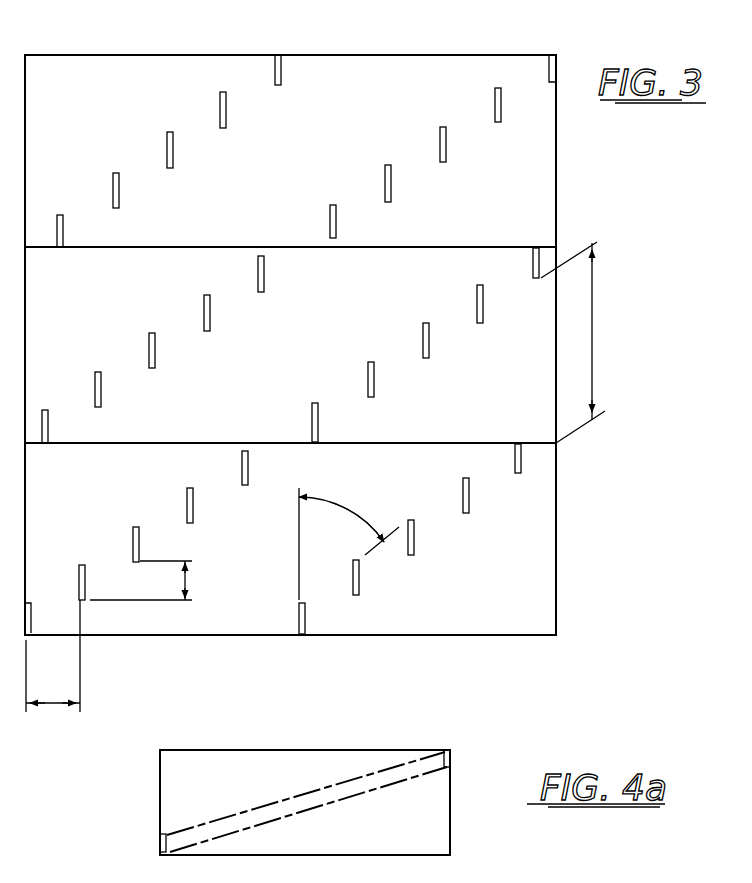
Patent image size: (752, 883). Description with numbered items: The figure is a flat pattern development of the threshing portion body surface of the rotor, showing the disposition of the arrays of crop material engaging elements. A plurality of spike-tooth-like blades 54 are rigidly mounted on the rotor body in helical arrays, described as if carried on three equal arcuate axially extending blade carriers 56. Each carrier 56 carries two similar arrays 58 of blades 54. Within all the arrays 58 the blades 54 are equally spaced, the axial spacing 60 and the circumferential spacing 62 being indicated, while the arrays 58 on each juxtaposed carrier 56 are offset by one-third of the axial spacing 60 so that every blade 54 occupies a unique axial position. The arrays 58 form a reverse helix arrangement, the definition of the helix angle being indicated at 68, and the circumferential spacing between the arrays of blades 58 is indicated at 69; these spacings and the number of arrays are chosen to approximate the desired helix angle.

The spike-tooth-like blade 54 is at (275, 70).
The blade carrier 56 is at (506, 188).
The array of blades 58 is at (158, 122).
The axial spacing 60 is at (55, 705).
The circumferential spacing 62 is at (187, 581).
The helix angle 68 is at (360, 487).
The circumferential spacing between arrays 69 is at (592, 352).